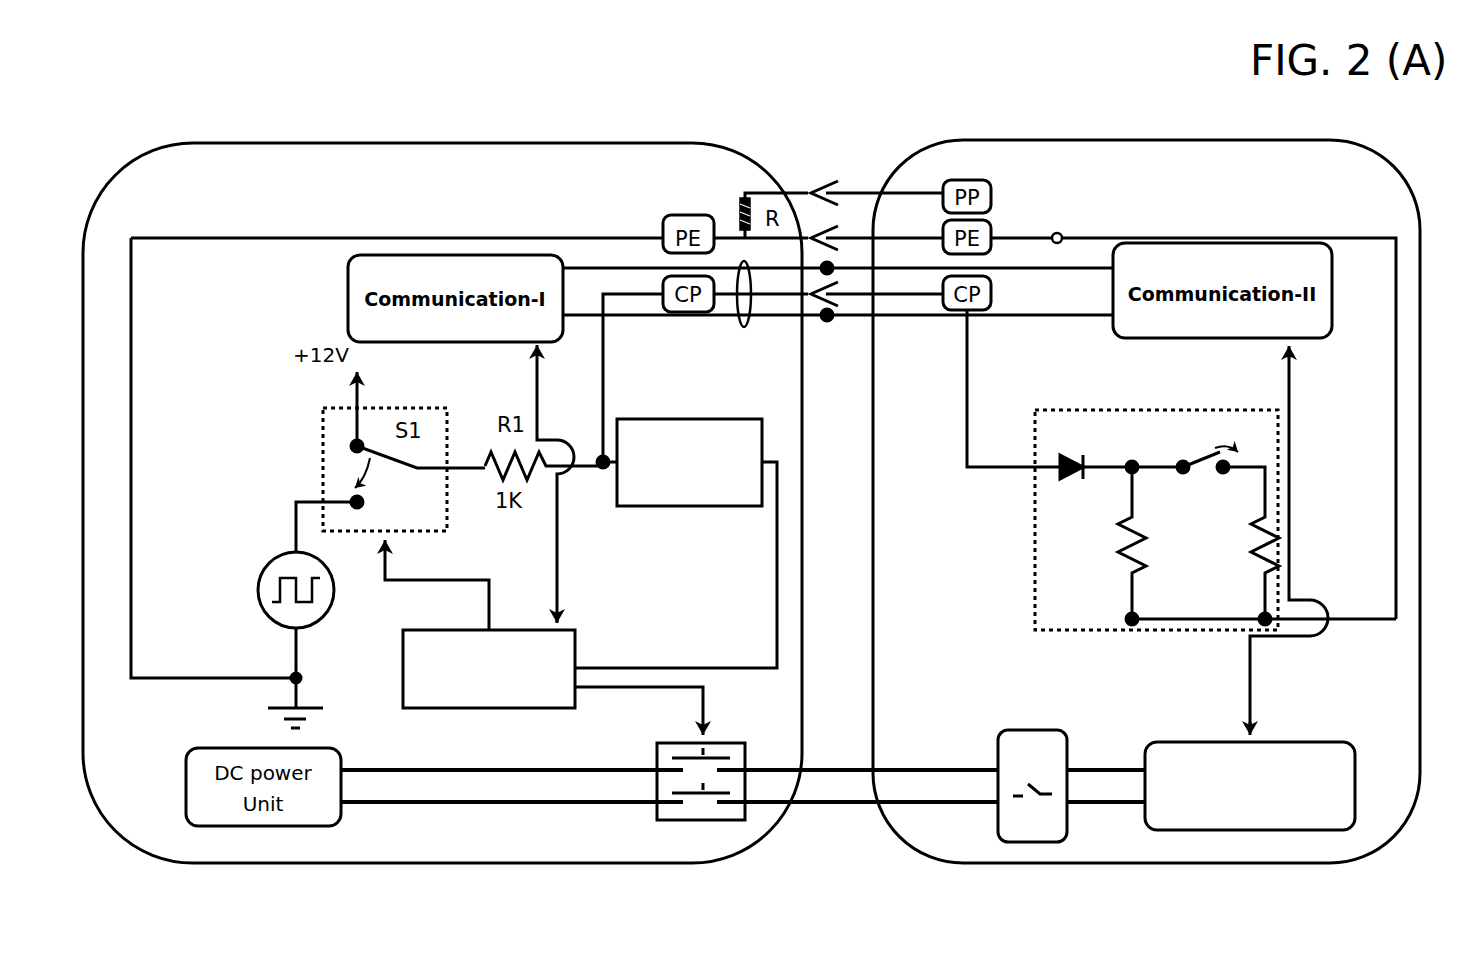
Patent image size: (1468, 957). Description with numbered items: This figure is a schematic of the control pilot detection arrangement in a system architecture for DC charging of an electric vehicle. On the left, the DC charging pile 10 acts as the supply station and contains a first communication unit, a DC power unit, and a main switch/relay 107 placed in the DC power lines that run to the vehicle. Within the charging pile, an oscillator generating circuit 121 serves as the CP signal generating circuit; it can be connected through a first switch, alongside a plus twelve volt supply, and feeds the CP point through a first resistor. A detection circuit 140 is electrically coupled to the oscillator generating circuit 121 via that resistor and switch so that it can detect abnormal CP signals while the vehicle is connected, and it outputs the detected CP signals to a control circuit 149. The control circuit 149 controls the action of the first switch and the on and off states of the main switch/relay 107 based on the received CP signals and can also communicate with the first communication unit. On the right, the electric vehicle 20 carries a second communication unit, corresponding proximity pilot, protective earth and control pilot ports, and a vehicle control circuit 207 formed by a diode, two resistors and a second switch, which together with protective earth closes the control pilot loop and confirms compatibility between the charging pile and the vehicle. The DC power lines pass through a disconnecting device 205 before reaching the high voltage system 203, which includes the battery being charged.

The DC charging pile 10 is at (470, 141).
The electric vehicle 20 is at (1078, 140).
The oscillator generating circuit 121 is at (251, 592).
The detection circuit 140 is at (688, 418).
The control circuit 149 is at (458, 708).
The main switch/relay 107 is at (692, 825).
The vehicle control circuit 207 is at (1030, 522).
The disconnecting device 205 is at (1030, 730).
The high voltage system 203 is at (1280, 740).